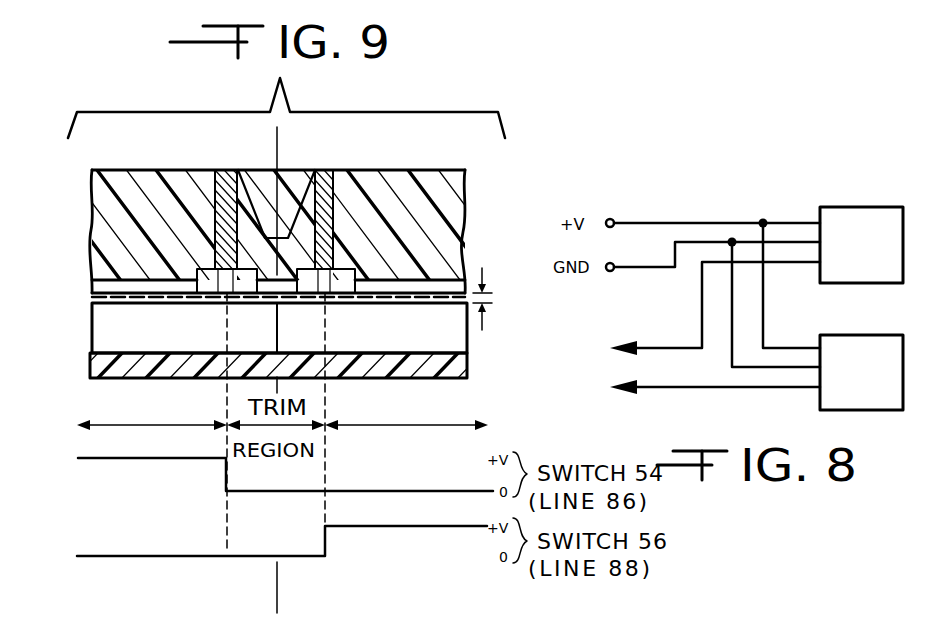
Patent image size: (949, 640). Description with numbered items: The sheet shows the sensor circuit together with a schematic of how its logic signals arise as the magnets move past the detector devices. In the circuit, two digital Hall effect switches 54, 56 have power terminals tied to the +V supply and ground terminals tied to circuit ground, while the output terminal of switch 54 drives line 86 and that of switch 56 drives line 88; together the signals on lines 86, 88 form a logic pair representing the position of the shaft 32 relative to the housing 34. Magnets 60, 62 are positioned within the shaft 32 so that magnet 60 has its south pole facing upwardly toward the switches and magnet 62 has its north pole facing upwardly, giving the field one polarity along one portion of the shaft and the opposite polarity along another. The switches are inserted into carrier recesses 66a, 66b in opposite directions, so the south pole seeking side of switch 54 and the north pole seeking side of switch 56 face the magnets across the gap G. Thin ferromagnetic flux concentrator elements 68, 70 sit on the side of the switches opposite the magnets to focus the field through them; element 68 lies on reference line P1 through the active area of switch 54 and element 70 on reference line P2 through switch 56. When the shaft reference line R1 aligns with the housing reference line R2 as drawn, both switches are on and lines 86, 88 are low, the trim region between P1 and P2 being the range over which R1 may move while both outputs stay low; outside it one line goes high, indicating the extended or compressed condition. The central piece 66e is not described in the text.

In FIG. 9, the housing 34 is at (472, 187).
In FIG. 9, the carrier recess 66a is at (213, 266).
In FIG. 9, the flux concentrator element 68 is at (230, 178).
In FIG. 9, the central pole piece 66e is at (262, 198).
In FIG. 9, the flux concentrator element 70 is at (340, 271).
In FIG. 9, the carrier recess 66b is at (352, 268).
In FIG. 9, the Hall effect switch 54 is at (193, 268).
In FIG. 8, the Hall effect switch 54 is at (862, 207).
In FIG. 9, the Hall effect switch 56 is at (353, 275).
In FIG. 8, the Hall effect switch 56 is at (860, 335).
In FIG. 9, the magnet 60 is at (93, 331).
In FIG. 9, the magnet 62 is at (462, 322).
In FIG. 9, the shaft 32 is at (94, 391).
In FIG. 8, the line 86 is at (672, 347).
In FIG. 8, the line 88 is at (700, 393).
In FIG. 9, the gap G is at (490, 287).
In FIG. 9, the reference line of the shaft R1 is at (277, 387).
In FIG. 9, the reference line of the housing R2 is at (277, 158).
In FIG. 9, the reference line P1 is at (226, 393).
In FIG. 9, the reference line P2 is at (324, 413).